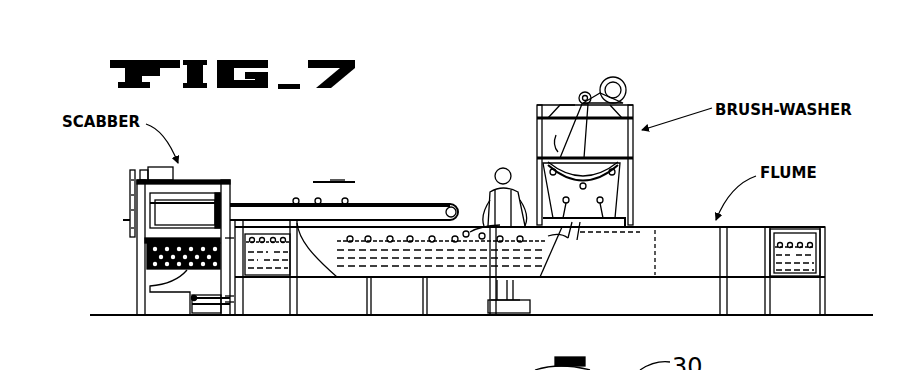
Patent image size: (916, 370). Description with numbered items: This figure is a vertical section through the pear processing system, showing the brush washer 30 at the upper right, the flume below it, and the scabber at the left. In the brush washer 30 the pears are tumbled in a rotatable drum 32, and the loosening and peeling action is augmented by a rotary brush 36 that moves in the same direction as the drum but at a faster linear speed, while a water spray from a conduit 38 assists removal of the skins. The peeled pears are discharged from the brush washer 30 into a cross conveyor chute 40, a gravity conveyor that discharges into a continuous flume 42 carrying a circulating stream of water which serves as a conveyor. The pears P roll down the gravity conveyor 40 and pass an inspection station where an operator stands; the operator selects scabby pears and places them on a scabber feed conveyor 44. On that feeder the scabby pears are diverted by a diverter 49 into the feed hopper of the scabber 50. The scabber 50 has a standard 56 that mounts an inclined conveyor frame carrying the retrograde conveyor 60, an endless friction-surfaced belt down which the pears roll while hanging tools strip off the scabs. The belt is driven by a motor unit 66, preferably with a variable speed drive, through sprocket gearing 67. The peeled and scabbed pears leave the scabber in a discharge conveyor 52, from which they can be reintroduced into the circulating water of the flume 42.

The brush washer frame 30 is at (551, 100).
The rotatable drum 32 is at (626, 108).
The rotary brush 36 is at (545, 168).
The conduit 38 is at (556, 138).
The cross conveyor chute 40 is at (608, 200).
The flume 42 is at (826, 250).
The scabber feed conveyor 44 is at (373, 204).
The diverter 49 is at (204, 197).
The scabber 50 is at (193, 180).
The discharge conveyor 52 is at (210, 302).
The standard 56 is at (147, 250).
The retrograde conveyor 60 is at (172, 270).
The motor unit 66 is at (165, 167).
The sprocket gearing 67 is at (129, 220).
The pears P is at (550, 240).